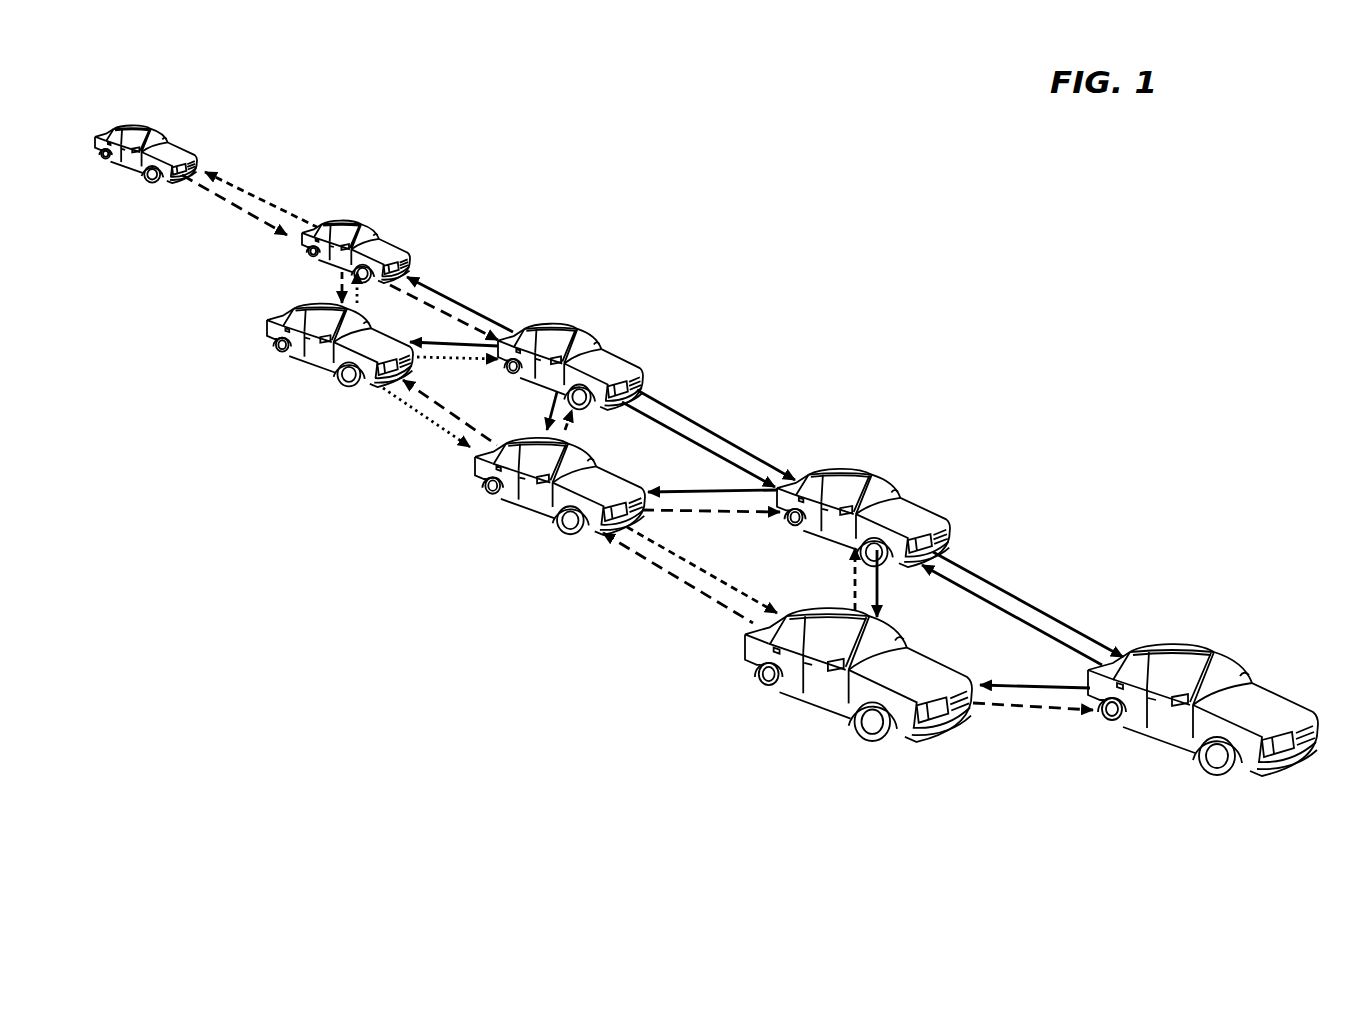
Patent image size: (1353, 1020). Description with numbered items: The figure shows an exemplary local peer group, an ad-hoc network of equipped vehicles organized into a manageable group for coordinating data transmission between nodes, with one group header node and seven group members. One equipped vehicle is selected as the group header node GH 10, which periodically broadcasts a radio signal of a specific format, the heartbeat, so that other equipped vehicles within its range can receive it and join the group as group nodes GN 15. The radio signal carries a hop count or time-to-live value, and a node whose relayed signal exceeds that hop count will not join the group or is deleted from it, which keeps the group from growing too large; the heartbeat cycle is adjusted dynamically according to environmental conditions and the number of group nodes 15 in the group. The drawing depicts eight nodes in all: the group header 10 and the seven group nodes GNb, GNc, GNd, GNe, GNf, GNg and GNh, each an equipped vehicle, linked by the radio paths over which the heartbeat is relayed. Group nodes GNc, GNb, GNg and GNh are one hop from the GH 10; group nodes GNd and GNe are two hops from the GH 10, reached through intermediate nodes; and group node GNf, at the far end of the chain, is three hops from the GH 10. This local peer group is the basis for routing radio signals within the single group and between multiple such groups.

The group node 15 is at (706, 453).
The group header node 10 is at (888, 515).
The group node f GNf is at (149, 148).
The group node e GNe is at (363, 248).
The group node d GNd is at (337, 335).
The group node c GNc is at (570, 364).
The group node b GNb is at (562, 486).
The group header GH is at (863, 515).
The group node g GNg is at (858, 675).
The group node h GNh is at (1203, 702).